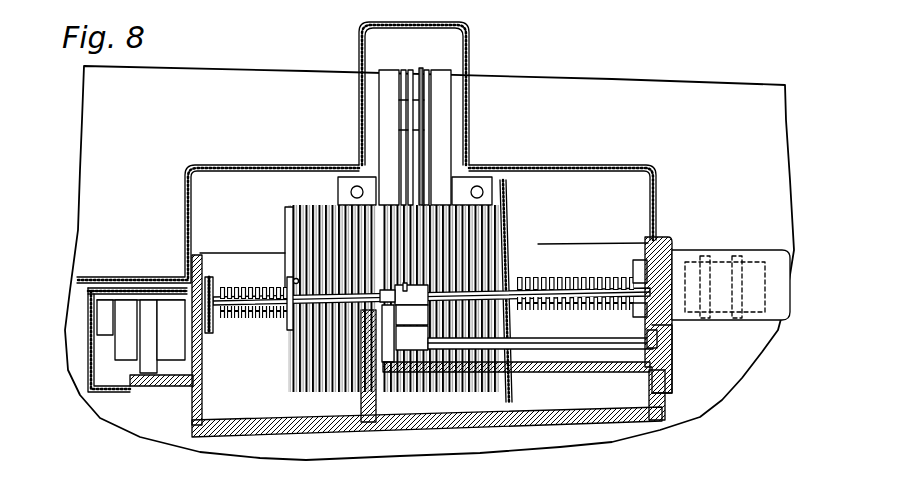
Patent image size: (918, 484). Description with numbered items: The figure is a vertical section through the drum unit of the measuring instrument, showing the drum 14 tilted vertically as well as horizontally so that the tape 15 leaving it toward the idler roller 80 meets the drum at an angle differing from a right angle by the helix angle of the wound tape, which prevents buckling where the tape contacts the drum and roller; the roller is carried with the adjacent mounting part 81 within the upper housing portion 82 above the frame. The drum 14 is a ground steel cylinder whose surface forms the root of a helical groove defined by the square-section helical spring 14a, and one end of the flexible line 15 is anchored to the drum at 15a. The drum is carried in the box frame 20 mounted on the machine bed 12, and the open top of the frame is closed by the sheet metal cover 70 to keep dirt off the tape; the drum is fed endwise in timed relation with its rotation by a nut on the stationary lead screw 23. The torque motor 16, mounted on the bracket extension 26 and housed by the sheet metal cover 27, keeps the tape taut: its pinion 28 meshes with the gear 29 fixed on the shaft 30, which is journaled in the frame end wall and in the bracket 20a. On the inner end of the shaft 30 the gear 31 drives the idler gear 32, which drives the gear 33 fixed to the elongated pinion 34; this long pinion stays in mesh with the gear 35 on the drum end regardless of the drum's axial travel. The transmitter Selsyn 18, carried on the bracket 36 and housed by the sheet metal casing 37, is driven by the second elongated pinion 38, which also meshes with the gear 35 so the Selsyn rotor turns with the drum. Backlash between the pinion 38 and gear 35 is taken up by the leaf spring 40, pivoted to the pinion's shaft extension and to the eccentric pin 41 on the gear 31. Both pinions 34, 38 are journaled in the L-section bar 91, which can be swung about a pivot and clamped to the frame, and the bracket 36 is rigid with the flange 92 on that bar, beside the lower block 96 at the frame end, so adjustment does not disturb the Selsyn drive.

The machine bed 12 is at (237, 82).
The drum 14 is at (287, 231).
The helical spring 14a is at (302, 207).
The flexible line 15 is at (413, 189).
The anchor point of the line 15a is at (294, 280).
The torque motor 16 is at (128, 362).
The transmitter Selsyn 18 is at (720, 262).
The frame 20 is at (295, 432).
The bracket 20a is at (364, 405).
The lead screw 23 is at (585, 281).
The bracket extension 26 is at (160, 386).
The sheet metal cover 27 is at (95, 393).
The pinion 28 is at (216, 315).
The gear 29 is at (214, 286).
The shaft 30 is at (431, 312).
The gear 31 is at (412, 315).
The idler gear 32 is at (412, 338).
The gear 33 is at (390, 333).
The elongated pinion 34 is at (586, 338).
The gear 35 is at (507, 241).
The bracket 36 is at (669, 256).
The sheet metal casing 37 is at (758, 254).
The second elongated pinion 38 is at (553, 283).
The leaf spring 40 is at (410, 284).
The eccentric pin 41 is at (410, 273).
The sheet metal cover 70 is at (656, 173).
The idler roller 80 is at (421, 76).
The mounting block 81 is at (478, 182).
The upper housing extension 82 is at (469, 55).
The bar 91 is at (598, 373).
The flange 92 is at (674, 361).
The lower block 96 is at (650, 371).